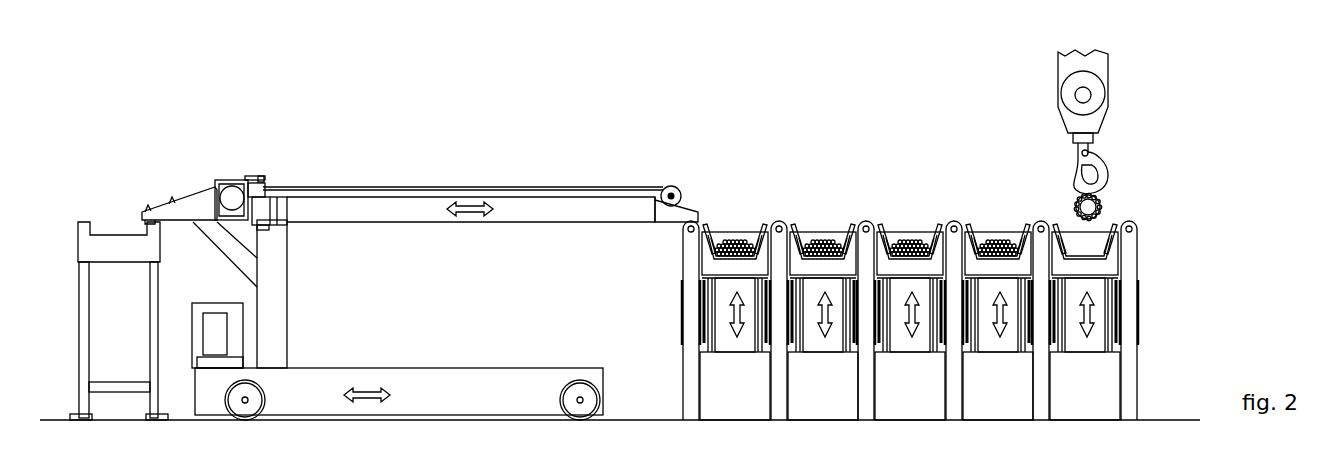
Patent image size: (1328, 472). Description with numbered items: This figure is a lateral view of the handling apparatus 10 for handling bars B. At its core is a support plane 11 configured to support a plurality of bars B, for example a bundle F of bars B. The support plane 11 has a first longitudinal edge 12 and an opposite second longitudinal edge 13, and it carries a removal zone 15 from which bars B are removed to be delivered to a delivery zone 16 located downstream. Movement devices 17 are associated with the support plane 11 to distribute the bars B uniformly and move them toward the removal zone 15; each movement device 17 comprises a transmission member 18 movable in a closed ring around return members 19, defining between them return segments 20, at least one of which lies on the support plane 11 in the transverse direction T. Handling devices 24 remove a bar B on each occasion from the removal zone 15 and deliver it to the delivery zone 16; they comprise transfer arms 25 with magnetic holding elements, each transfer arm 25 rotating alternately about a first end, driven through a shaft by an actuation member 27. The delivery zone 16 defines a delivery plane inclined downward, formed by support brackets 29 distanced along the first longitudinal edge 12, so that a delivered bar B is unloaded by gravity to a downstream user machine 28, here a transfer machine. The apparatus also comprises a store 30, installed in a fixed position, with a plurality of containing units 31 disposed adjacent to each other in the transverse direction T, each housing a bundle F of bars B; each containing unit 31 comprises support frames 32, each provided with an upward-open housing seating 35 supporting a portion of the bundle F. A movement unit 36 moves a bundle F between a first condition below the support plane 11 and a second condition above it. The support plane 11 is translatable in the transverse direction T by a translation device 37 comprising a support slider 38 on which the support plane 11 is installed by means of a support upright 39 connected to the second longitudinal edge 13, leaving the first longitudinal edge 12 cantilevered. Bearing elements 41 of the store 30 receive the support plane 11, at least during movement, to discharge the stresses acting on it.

The handling apparatus 10 is at (782, 75).
The support plane 11 is at (488, 241).
The first longitudinal edge 12 is at (670, 182).
The second longitudinal edge 13 is at (278, 177).
The removal zone 15 is at (250, 170).
The delivery zone 16 is at (193, 188).
The movement devices 17 is at (482, 185).
The transmission member 18 is at (540, 187).
The return members 19 is at (680, 197).
The return segments 20 is at (417, 187).
The handling devices 24 is at (237, 177).
The transfer arms 25 is at (260, 180).
The actuation member 27 is at (268, 202).
The user machine 28 is at (112, 213).
The support brackets 29 is at (185, 212).
The store 30 is at (910, 235).
The containing units 31 is at (713, 225).
The support frames 32 is at (715, 266).
The housing seating 35 is at (797, 230).
The movement unit 36 is at (765, 327).
The translation device 37 is at (492, 352).
The support slider 38 is at (432, 397).
The support upright 39 is at (275, 329).
The bearing elements 41 is at (782, 252).
The bars B is at (738, 238).
The bundle F is at (752, 233).
The transverse direction T is at (468, 207).